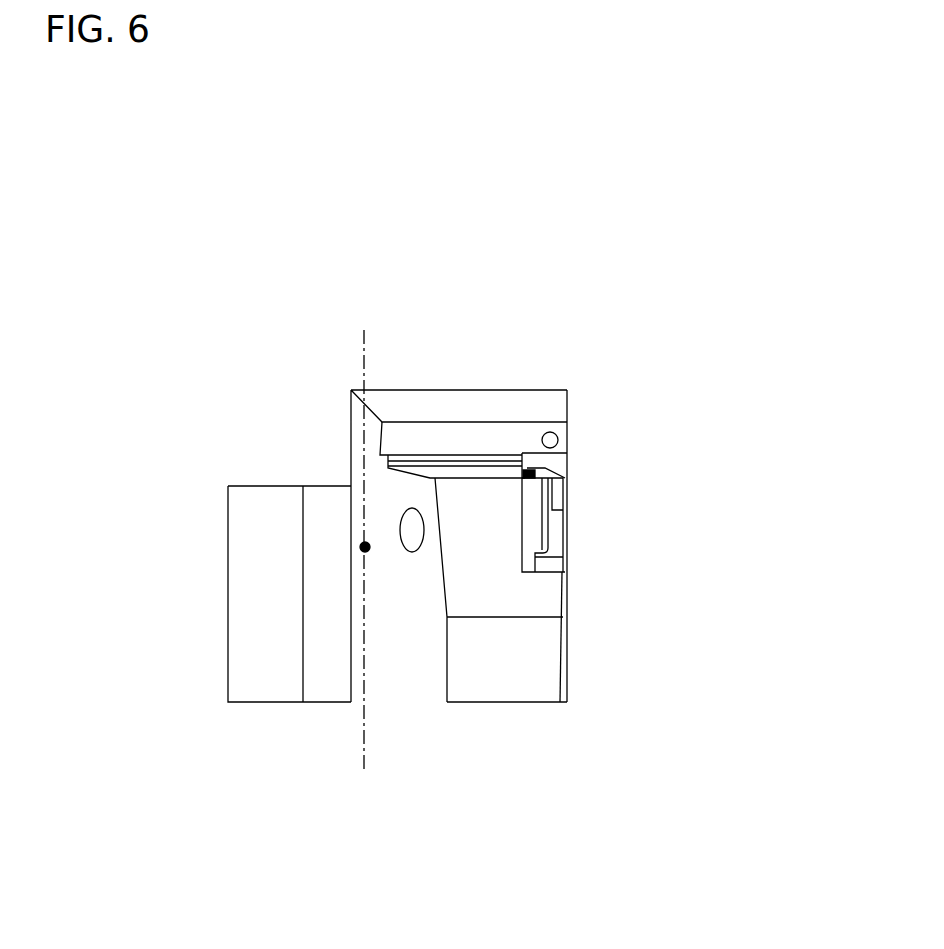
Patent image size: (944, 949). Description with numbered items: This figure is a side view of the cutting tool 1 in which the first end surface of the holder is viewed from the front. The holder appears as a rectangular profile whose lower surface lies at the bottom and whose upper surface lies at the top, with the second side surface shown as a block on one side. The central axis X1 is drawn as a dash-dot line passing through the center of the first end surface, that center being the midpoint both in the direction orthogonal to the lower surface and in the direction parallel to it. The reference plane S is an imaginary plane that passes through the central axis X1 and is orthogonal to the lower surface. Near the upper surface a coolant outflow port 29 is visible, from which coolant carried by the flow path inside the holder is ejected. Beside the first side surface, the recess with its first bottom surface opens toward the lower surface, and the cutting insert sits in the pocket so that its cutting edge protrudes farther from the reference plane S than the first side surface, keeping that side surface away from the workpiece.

The cutting tool 1 is at (288, 318).
The coolant outflow port 29 is at (545, 432).
The central axis X1 is at (365, 547).
The reference plane S is at (379, 557).